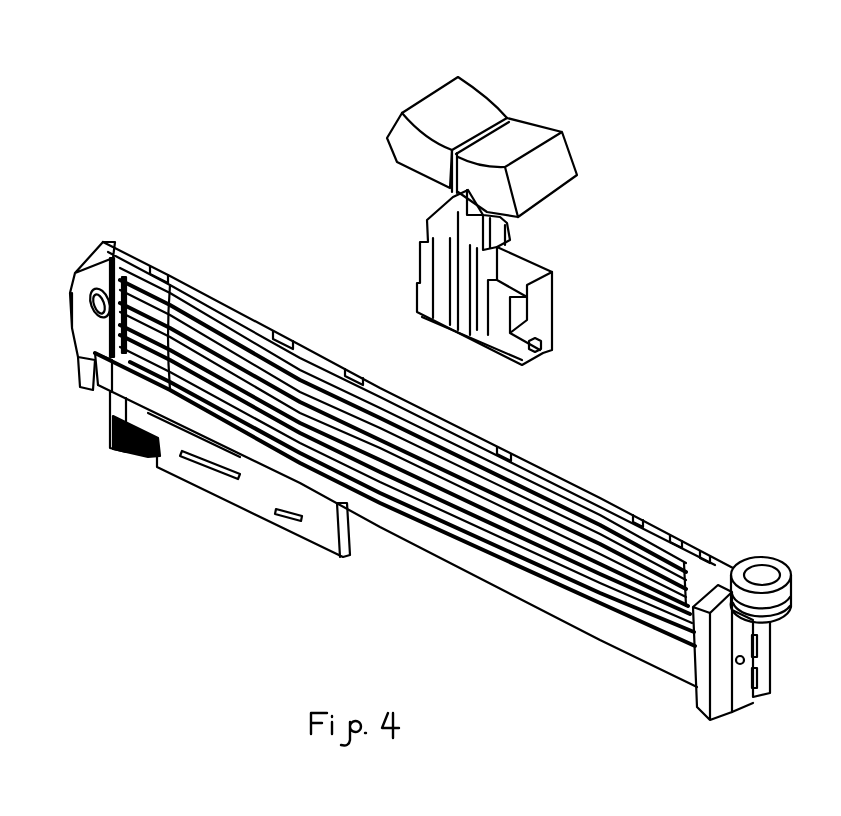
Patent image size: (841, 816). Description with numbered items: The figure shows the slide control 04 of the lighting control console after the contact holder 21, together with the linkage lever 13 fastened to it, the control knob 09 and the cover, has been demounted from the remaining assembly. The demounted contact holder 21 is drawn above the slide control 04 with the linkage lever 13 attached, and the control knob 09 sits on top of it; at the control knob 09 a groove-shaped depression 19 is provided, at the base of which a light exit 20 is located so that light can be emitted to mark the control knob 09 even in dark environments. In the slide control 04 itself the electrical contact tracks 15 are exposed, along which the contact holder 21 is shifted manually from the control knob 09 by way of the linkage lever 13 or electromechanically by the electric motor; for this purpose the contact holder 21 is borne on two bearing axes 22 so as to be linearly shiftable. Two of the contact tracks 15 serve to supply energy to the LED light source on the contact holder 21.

The slide control 04 is at (442, 402).
The control knob 09 is at (560, 162).
The linkage lever 13 is at (500, 235).
The contact tracks 15 is at (562, 510).
The groove-shaped depression 19 is at (512, 112).
The light exit 20 is at (476, 128).
The contact holder 21 is at (543, 313).
The bearing axes 22 is at (633, 642).